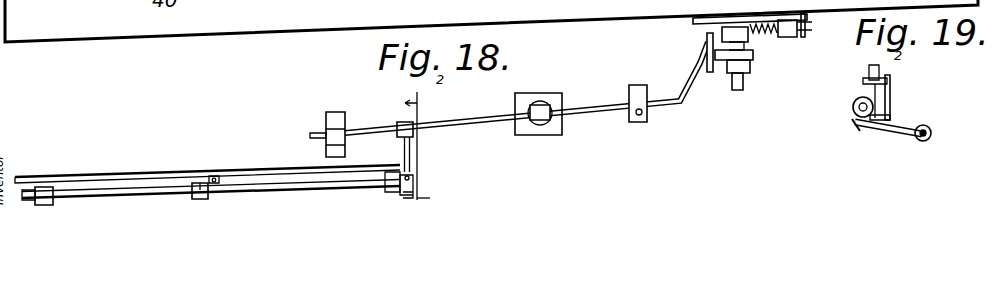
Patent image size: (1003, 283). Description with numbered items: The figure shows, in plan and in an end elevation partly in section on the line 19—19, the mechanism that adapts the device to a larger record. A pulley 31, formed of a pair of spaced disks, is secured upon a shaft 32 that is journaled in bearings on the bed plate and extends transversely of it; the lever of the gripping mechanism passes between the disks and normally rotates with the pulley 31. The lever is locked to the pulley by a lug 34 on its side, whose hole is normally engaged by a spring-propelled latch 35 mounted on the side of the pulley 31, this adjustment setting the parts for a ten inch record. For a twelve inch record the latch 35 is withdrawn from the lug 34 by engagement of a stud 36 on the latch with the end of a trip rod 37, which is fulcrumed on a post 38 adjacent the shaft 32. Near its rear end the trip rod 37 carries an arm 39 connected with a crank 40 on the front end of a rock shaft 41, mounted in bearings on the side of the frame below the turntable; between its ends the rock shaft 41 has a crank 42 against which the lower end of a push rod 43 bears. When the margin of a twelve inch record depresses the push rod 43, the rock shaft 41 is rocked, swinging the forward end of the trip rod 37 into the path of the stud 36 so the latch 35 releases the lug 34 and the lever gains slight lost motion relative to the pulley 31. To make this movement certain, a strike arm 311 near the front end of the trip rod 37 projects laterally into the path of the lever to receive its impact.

In FIG. 18, the section line 19 is at (429, 148).
In FIG. 18, the pulley 31 is at (695, 23).
In FIG. 18, the strike arm 311 is at (707, 52).
In FIG. 18, the shaft 32 is at (742, 88).
In FIG. 18, the lug 34 is at (803, 38).
In FIG. 18, the latch 35 is at (806, 24).
In FIG. 18, the stud 36 is at (782, 37).
In FIG. 18, the trip rod 37 is at (690, 104).
In FIG. 19, the trip rod 37 is at (931, 131).
In FIG. 18, the post 38 is at (540, 100).
In FIG. 18, the arm 39 is at (411, 158).
In FIG. 19, the arm 39 is at (880, 130).
In FIG. 18, the crank 40 is at (412, 176).
In FIG. 19, the crank 40 is at (857, 124).
In FIG. 18, the rock shaft 41 is at (236, 186).
In FIG. 19, the rock shaft 41 is at (855, 112).
In FIG. 18, the crank 42 is at (192, 183).
In FIG. 18, the push rod 43 is at (215, 176).
In FIG. 19, the push rod 43 is at (890, 97).